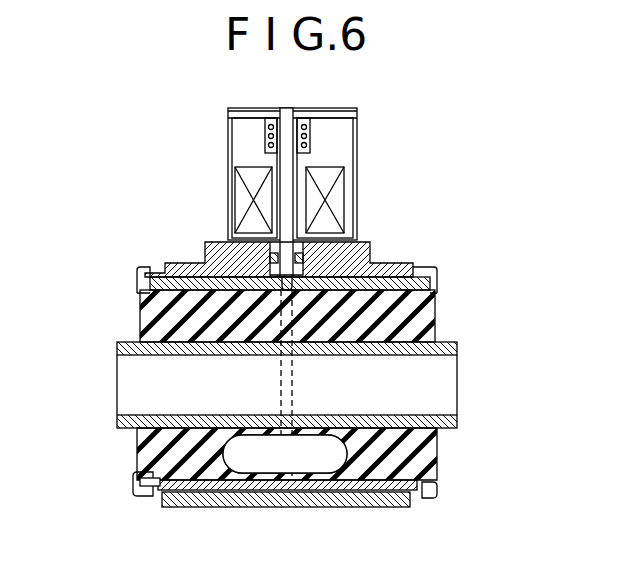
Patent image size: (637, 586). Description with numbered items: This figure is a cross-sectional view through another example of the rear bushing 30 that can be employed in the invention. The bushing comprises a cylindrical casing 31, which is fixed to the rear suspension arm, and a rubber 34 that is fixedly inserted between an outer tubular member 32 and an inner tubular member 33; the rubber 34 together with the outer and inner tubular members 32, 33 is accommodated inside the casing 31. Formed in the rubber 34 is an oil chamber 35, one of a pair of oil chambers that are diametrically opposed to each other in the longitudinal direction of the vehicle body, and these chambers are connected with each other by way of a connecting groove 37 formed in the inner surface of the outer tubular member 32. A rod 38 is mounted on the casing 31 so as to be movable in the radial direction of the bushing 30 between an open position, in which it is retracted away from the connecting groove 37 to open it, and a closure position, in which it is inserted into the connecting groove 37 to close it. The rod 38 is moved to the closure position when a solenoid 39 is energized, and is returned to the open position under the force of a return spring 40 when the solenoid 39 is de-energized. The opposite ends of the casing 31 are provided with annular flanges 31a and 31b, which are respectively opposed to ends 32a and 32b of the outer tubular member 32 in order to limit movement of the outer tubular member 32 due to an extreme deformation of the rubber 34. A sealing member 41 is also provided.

The rear bushing 30 is at (415, 266).
The cylindrical casing 31 is at (367, 240).
The annular flange 31a is at (433, 489).
The annular flange 31b is at (137, 488).
The outer tubular member 32 is at (237, 500).
The end of outer tubular member 32a is at (425, 468).
The end of outer tubular member 32b is at (137, 475).
The inner tubular member 33 is at (170, 415).
The rubber 34 is at (153, 312).
The oil chamber 35 is at (342, 457).
The connecting groove 37 is at (292, 396).
The rod 38 is at (293, 118).
The solenoid 39 is at (238, 185).
The return spring 40 is at (308, 137).
The sealing member 41 is at (270, 257).